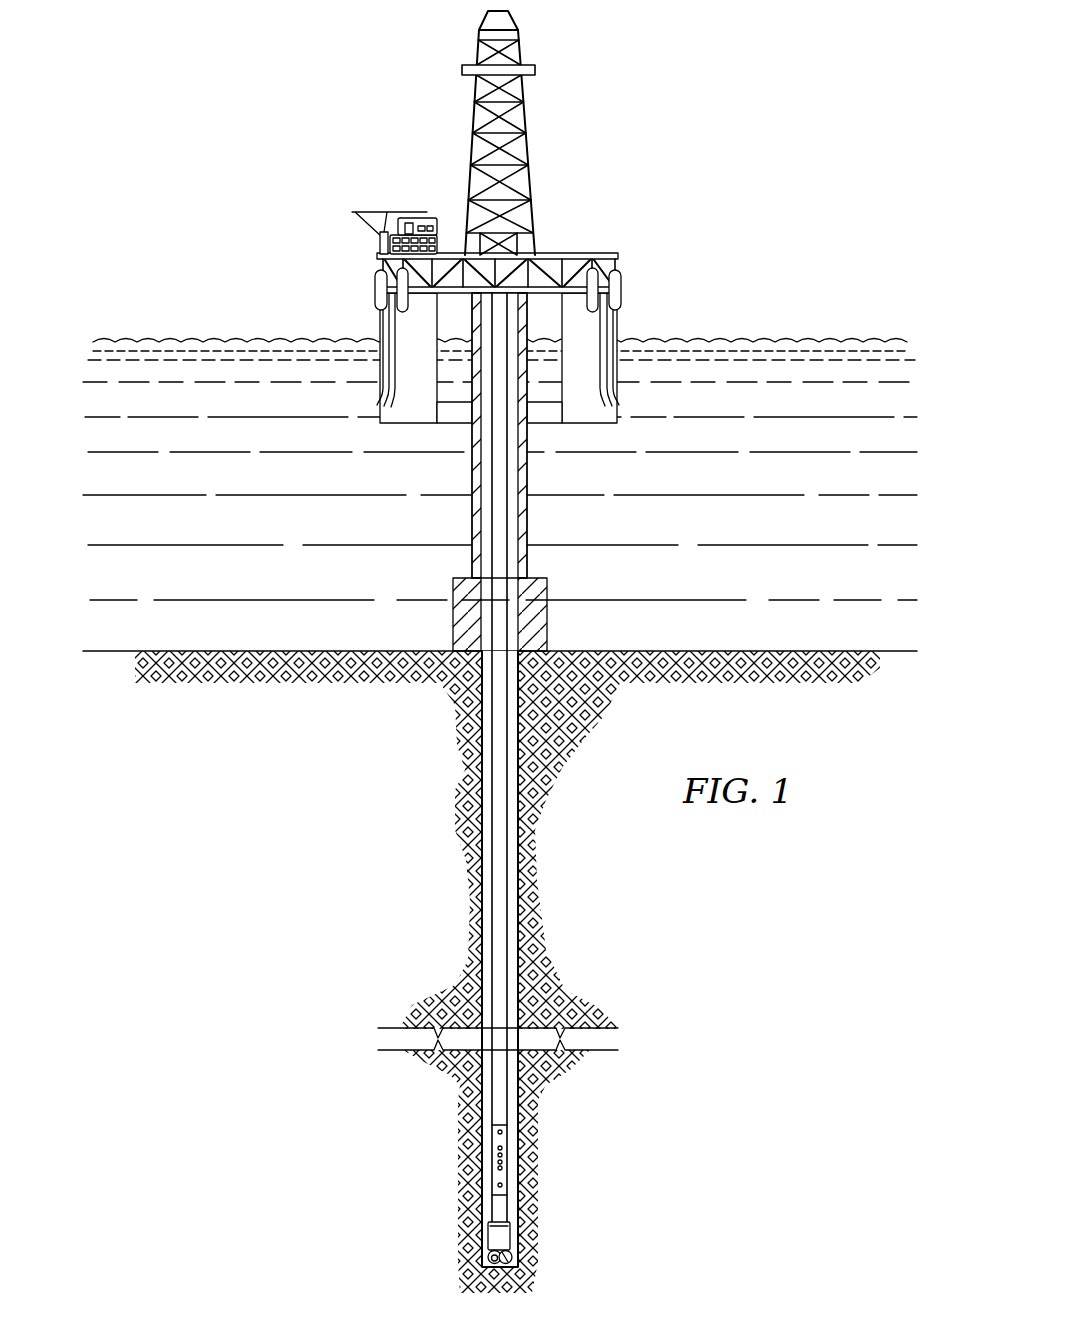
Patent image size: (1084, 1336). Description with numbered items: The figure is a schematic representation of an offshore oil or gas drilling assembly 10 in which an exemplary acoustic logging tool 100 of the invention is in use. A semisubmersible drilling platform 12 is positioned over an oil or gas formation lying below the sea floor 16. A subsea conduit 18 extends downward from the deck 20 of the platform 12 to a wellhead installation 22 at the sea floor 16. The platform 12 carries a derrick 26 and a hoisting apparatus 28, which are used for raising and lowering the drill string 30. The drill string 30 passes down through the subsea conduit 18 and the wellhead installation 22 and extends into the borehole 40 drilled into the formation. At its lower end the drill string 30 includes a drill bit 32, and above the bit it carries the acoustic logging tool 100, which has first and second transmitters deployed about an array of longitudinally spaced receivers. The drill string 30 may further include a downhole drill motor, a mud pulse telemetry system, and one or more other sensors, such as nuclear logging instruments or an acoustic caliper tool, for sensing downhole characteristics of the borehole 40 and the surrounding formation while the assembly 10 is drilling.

The offshore oil or gas drilling assembly 10 is at (500, 652).
The semisubmersible drilling platform 12 is at (603, 257).
The sea floor 16 is at (777, 650).
The subsea conduit 18 is at (527, 517).
The deck 20 is at (615, 292).
The wellhead installation 22 is at (538, 577).
The derrick 26 is at (500, 237).
The hoisting apparatus 28 is at (522, 53).
The drill string 30 is at (498, 437).
The drill bit 32 is at (510, 1258).
The borehole 40 is at (480, 925).
The acoustic logging tool 100 is at (503, 1137).